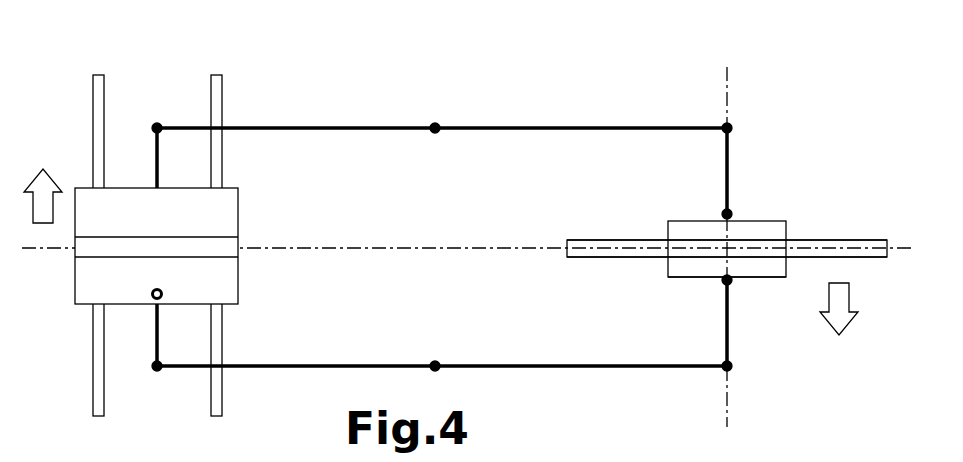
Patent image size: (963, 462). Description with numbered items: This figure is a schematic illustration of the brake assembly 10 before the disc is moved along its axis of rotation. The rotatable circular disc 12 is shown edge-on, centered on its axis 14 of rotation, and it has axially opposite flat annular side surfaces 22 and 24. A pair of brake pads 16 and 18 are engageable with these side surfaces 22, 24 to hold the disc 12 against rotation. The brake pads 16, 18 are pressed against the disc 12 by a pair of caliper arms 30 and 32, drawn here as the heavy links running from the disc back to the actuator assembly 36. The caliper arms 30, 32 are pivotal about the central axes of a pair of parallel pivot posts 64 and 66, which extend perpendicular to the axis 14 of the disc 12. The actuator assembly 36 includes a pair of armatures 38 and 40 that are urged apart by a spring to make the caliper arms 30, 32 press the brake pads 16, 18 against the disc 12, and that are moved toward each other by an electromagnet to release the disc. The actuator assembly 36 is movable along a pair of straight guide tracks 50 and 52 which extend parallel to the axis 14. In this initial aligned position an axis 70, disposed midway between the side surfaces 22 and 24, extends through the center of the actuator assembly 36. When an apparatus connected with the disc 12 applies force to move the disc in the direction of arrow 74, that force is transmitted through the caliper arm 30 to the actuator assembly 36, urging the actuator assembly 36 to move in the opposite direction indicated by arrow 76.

The brake assembly 10 is at (810, 112).
The rotatable circular disc 12 is at (860, 242).
The axis of rotation 14 is at (730, 100).
The brake pad 16 is at (770, 270).
The brake pad 18 is at (778, 222).
The side surface 22 is at (620, 258).
The side surface 24 is at (620, 240).
The caliper arm 30 is at (553, 370).
The caliper arm 32 is at (500, 126).
The actuator assembly 36 is at (245, 232).
The armature 38 is at (233, 282).
The armature 40 is at (228, 203).
The guide track 50 is at (93, 395).
The guide track 52 is at (222, 388).
The pivot post 64 is at (433, 368).
The pivot post 66 is at (433, 124).
The axis 70 is at (533, 222).
The arrow 74 is at (843, 318).
The arrow 76 is at (40, 188).